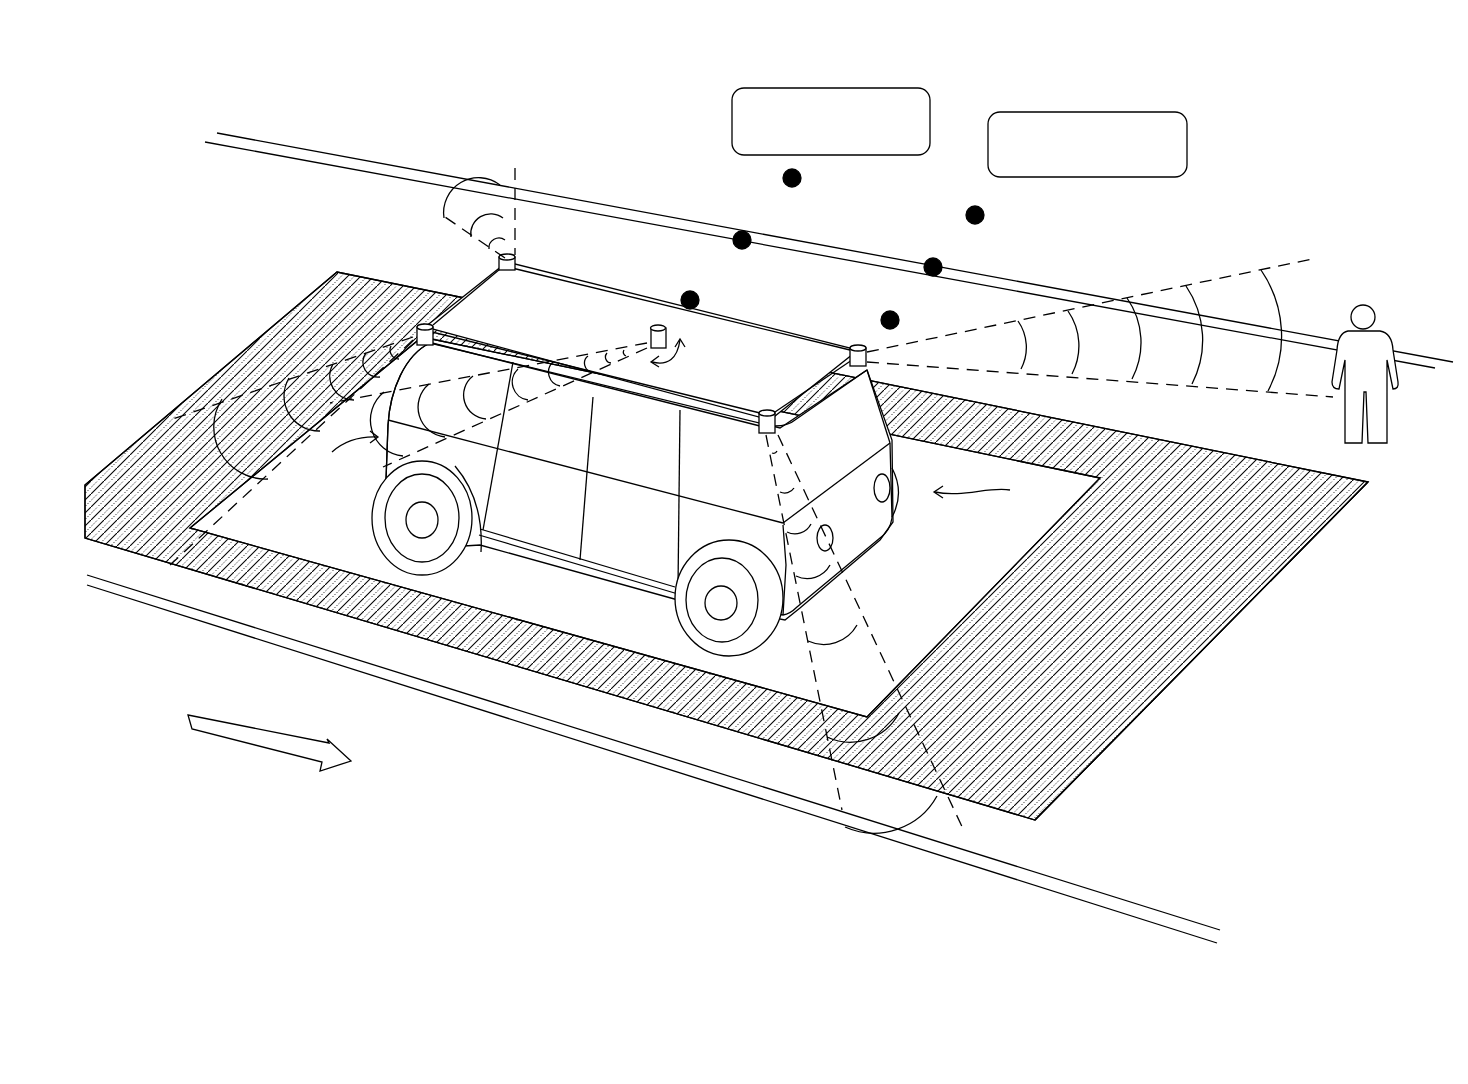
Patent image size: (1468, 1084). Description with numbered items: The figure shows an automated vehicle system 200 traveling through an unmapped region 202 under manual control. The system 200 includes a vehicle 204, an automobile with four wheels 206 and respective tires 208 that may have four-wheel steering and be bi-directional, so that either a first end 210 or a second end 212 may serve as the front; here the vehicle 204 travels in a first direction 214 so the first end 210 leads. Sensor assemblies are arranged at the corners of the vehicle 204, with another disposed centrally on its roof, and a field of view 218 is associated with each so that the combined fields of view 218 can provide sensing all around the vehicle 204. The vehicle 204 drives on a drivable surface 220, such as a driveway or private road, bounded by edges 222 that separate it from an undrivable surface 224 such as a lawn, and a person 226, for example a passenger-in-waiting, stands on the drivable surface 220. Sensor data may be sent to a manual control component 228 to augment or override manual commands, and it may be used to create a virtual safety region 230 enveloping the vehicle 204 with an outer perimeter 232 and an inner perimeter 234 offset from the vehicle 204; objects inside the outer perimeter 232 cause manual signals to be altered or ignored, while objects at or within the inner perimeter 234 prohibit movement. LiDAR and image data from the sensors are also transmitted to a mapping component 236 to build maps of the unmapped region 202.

The automated vehicle system 200 is at (186, 94).
The unmapped region 202 is at (1331, 198).
The vehicle 204 is at (583, 403).
The wheels 206 is at (407, 545).
The tires 208 is at (375, 503).
The first end 210 is at (993, 495).
The second end 212 is at (342, 456).
The first direction 214 is at (291, 743).
The field of view 218 is at (485, 193).
The drivable surface 220 is at (1337, 680).
The edges 222 is at (400, 167).
The undrivable surface 224 is at (618, 118).
The person 226 is at (1375, 310).
The manual control component 228 is at (1073, 171).
The safety region 230 is at (1088, 680).
The outer perimeter 232 is at (1278, 573).
The inner perimeter 234 is at (1007, 572).
The mapping component 236 is at (816, 150).